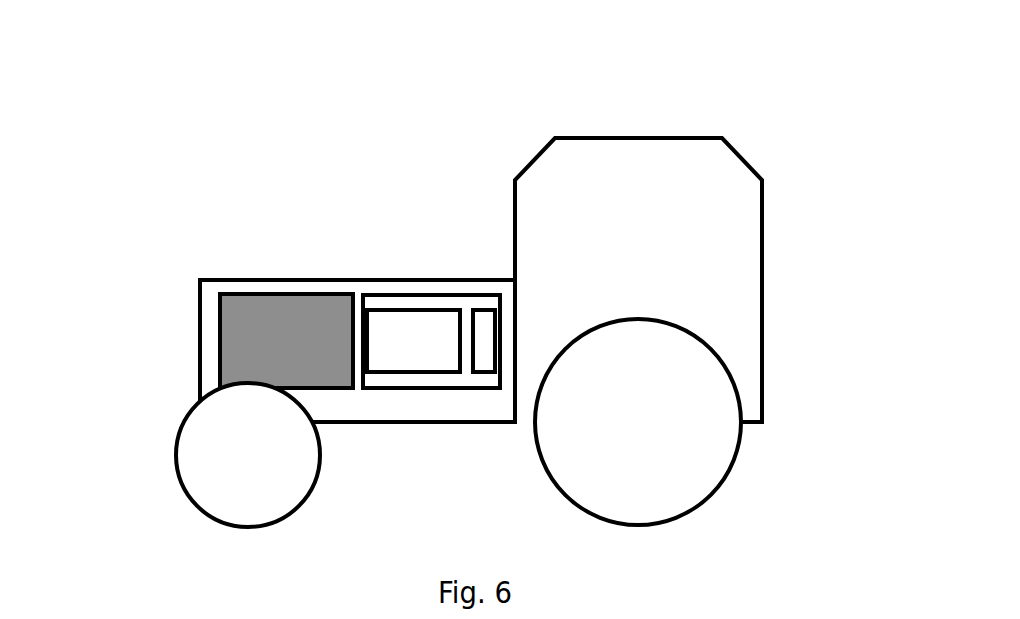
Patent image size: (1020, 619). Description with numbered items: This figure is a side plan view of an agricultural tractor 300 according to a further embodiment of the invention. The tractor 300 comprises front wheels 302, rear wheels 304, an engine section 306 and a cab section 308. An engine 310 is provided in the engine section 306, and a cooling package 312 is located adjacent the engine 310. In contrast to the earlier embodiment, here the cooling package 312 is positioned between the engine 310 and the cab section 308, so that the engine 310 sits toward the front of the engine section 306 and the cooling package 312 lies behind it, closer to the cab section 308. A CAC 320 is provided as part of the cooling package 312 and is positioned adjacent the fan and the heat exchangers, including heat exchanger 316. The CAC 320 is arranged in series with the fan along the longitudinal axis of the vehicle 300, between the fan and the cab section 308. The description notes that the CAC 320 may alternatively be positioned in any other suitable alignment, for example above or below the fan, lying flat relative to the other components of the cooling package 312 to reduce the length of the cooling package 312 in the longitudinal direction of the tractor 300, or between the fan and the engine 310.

The agricultural tractor 300 is at (208, 106).
The front wheels 302 is at (228, 473).
The rear wheels 304 is at (658, 460).
The engine section 306 is at (267, 280).
The cab section 308 is at (673, 223).
The engine 310 is at (257, 340).
The cooling package 312 is at (438, 390).
The heat exchanger 316 is at (397, 310).
The CAC 320 is at (487, 310).